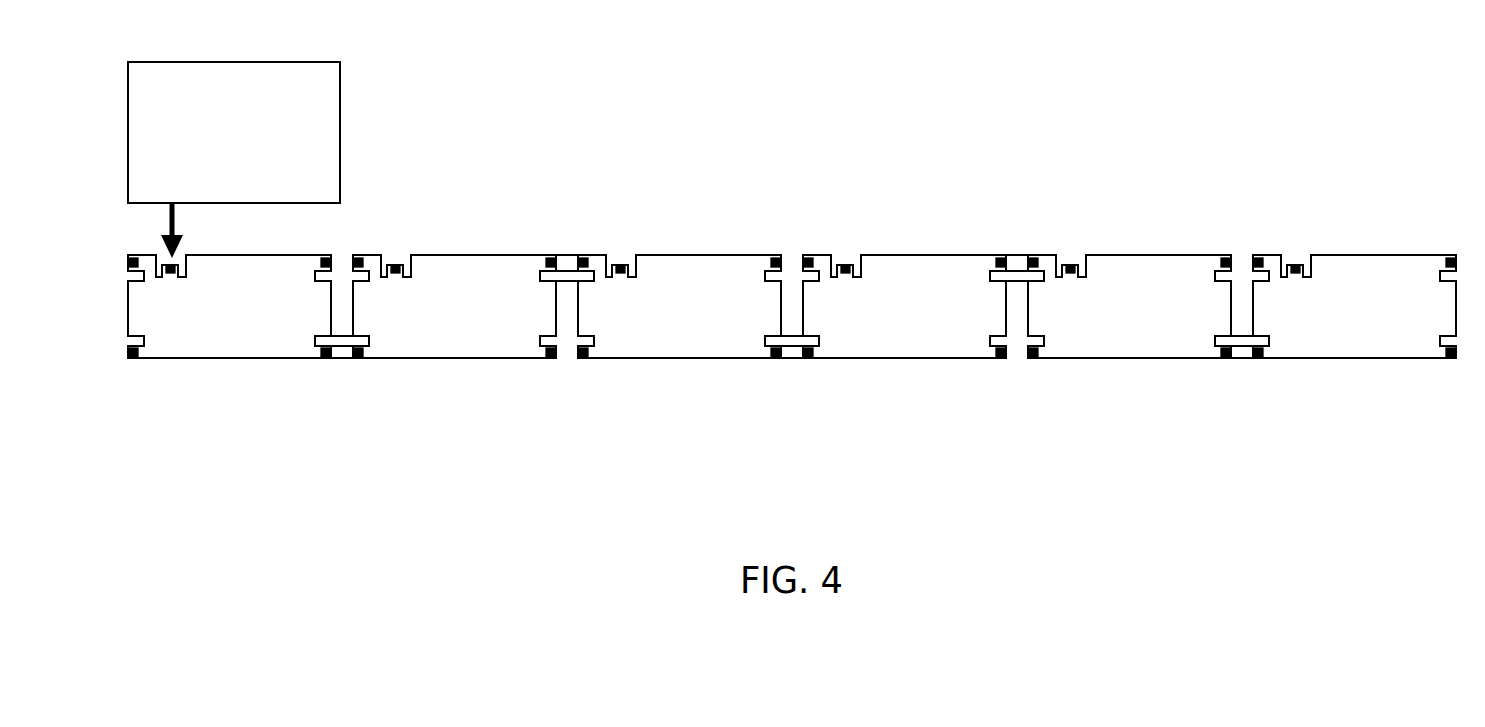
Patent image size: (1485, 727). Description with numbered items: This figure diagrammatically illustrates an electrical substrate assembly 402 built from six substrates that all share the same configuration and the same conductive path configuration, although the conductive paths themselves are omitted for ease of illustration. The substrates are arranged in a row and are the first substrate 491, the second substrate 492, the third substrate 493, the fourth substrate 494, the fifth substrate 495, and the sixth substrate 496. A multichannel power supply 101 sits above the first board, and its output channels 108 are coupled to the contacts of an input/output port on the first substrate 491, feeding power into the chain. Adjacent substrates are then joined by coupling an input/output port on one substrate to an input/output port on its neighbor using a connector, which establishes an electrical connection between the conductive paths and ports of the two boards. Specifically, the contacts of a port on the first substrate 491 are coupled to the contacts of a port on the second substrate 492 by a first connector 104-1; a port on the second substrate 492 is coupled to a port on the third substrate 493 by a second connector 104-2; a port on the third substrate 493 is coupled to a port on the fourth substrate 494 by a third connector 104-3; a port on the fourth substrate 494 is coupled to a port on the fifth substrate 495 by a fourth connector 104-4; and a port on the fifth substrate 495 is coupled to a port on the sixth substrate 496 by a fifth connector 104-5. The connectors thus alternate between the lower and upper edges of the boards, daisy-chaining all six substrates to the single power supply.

The multichannel power supply 101 is at (215, 172).
The output channels 108 is at (204, 227).
The electrical substrate assembly 402 is at (824, 70).
The substrate #1 491 is at (229, 306).
The substrate #2 492 is at (454, 306).
The substrate #3 493 is at (679, 306).
The substrate #4 494 is at (904, 306).
The substrate #5 495 is at (1129, 306).
The substrate #6 496 is at (1354, 306).
The first connector 104-1 is at (340, 352).
The second connector 104-2 is at (570, 258).
The third connector 104-3 is at (790, 352).
The fourth connector 104-4 is at (1017, 258).
The fifth connector 104-5 is at (1243, 352).